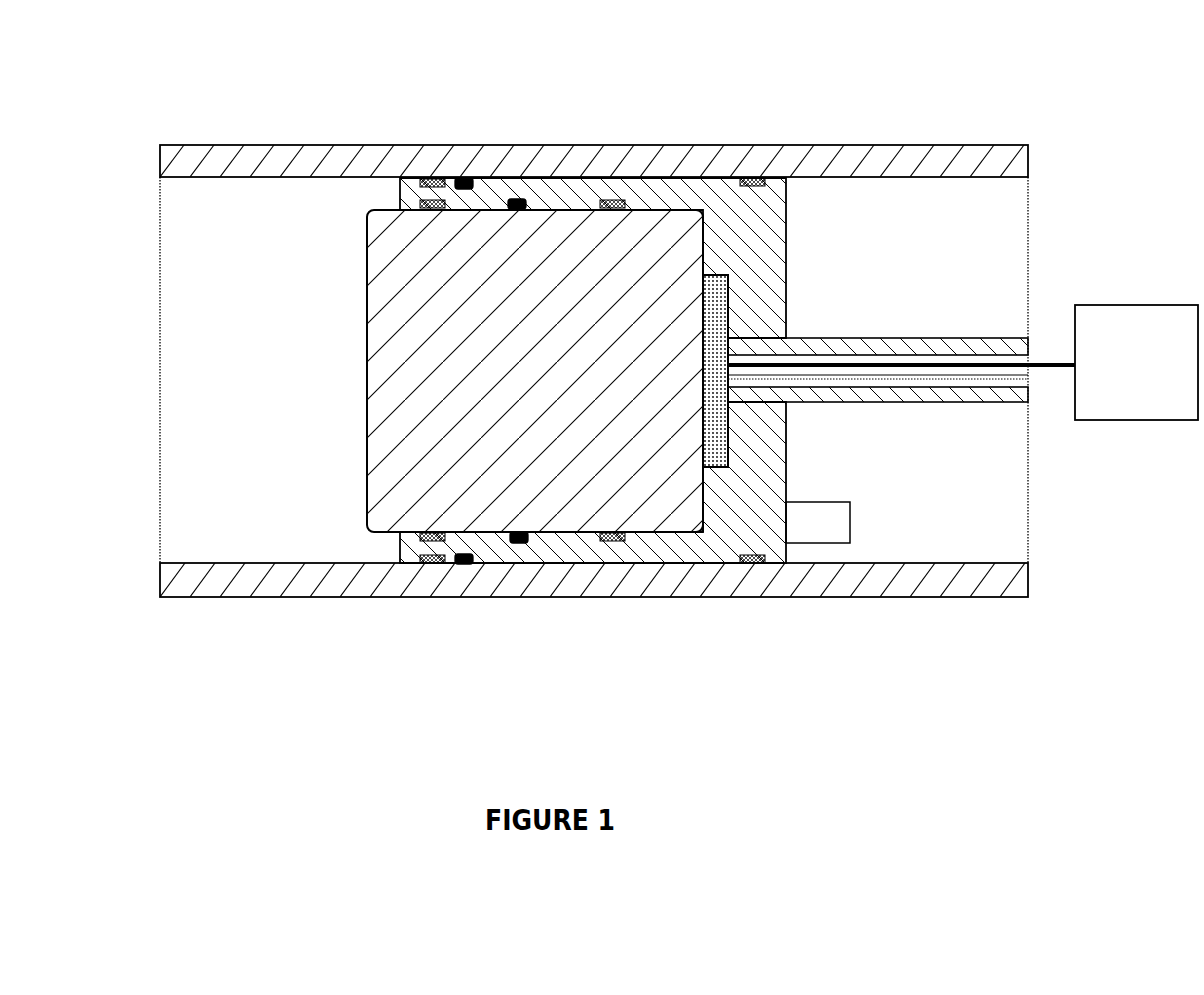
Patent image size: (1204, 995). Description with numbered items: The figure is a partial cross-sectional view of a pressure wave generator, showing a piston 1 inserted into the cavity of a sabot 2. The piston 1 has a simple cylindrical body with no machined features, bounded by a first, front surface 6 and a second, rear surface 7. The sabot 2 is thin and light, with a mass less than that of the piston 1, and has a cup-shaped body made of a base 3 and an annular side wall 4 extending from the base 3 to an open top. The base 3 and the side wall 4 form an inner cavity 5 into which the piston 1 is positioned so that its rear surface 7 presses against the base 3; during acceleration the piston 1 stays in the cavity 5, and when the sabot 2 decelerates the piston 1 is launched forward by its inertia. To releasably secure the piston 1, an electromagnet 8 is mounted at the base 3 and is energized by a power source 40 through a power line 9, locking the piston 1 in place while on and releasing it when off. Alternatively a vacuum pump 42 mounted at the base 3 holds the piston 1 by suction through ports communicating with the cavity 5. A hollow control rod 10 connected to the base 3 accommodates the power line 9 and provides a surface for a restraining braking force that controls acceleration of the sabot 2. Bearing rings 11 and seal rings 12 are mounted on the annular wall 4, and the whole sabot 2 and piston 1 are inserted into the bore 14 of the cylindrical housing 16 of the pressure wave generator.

The piston 1 is at (396, 383).
The sabot 2 is at (792, 276).
The base 3 is at (778, 431).
The annular side wall 4 is at (652, 192).
The inner cavity 5 is at (567, 205).
The front surface 6 is at (361, 322).
The rear surface 7 is at (700, 477).
The electromagnet 8 is at (731, 340).
The power line 9 is at (907, 353).
The control rod 10 is at (916, 402).
The bearing rings 11 is at (746, 562).
The seal rings 12 is at (513, 199).
The bore 14 is at (216, 352).
The housing 16 is at (939, 155).
The power source 40 is at (963, 362).
The vacuum pump 42 is at (818, 522).